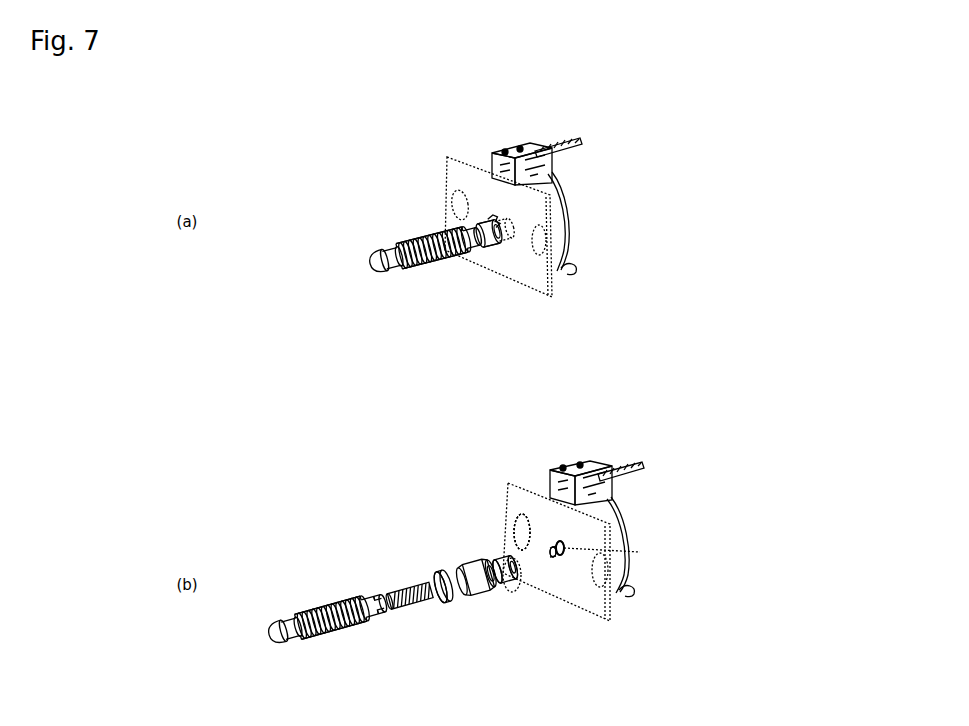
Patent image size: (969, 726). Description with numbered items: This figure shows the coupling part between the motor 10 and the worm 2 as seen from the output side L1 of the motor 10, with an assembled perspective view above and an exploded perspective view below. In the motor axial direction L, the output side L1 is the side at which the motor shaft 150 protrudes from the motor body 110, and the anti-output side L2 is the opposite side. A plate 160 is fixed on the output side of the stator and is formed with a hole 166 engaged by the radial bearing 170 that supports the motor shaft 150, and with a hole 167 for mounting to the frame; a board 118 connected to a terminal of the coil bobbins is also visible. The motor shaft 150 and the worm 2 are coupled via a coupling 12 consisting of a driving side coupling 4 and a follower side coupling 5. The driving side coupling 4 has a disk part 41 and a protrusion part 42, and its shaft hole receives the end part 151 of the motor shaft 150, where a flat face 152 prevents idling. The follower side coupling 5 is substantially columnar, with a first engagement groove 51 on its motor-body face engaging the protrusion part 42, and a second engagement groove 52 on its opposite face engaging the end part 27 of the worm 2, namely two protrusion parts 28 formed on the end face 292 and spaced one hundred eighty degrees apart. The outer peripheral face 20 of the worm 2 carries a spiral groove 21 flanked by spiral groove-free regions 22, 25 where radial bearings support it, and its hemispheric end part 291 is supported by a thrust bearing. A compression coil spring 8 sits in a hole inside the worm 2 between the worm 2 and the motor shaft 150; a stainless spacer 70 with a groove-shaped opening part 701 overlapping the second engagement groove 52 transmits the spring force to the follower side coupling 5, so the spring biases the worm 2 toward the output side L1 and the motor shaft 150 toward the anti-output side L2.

The worm 2 is at (362, 442).
The driving side coupling 4 is at (512, 250).
The follower side coupling 5 is at (461, 398).
The compression coil spring 8 is at (403, 586).
The motor 10 is at (588, 181).
The coupling 12 is at (478, 409).
The outer peripheral face 20 is at (417, 230).
The spiral groove 21 is at (382, 433).
The spiral groove-free region 22 is at (472, 237).
The spiral groove-free region 25 is at (388, 248).
The end part 27 is at (380, 615).
The protrusion part 28 is at (376, 604).
The disk part 41 is at (503, 555).
The protrusion part 42 is at (492, 586).
The first engagement groove 51 is at (493, 212).
The second engagement groove 52 is at (487, 243).
The spacer 70 is at (448, 597).
The groove-shaped opening part 701 is at (447, 573).
The motor body 110 is at (578, 270).
The board 118 is at (513, 150).
The motor shaft 150 is at (557, 560).
The end part 151 is at (522, 532).
The flat face 152 is at (524, 520).
The plate 160 is at (533, 277).
The hole 166 is at (571, 548).
The hole 167 is at (447, 193).
The radial bearing 170 is at (568, 558).
The end part 291 is at (382, 267).
The end face 292 is at (468, 250).
The motor axial direction L is at (295, 445).
The output side L1 is at (377, 262).
The anti-output side L2 is at (576, 208).